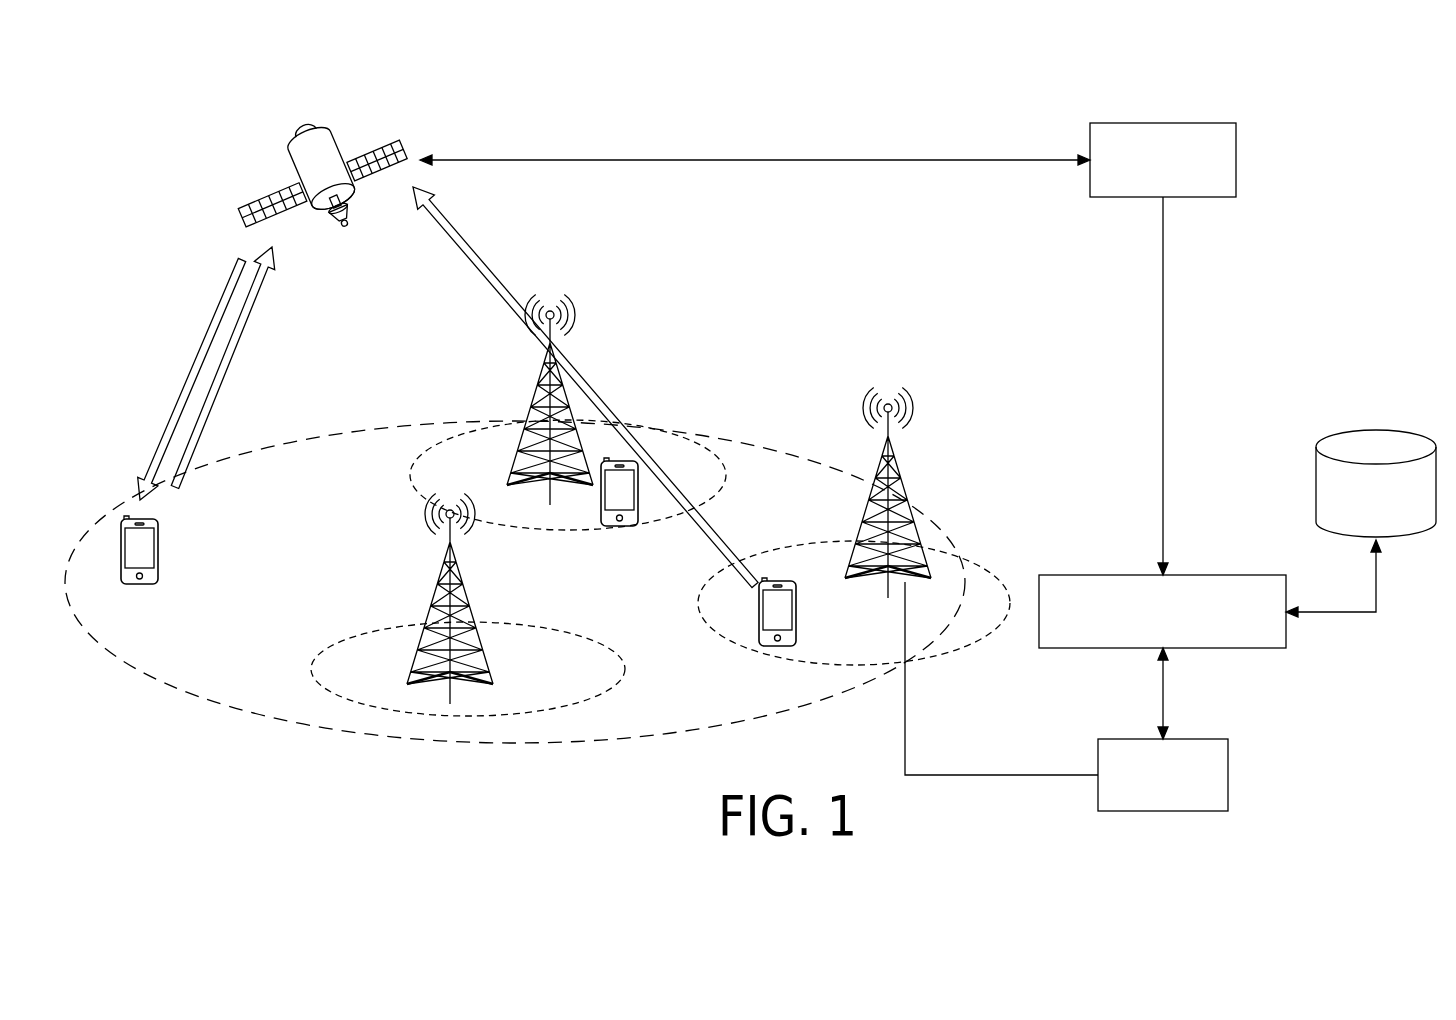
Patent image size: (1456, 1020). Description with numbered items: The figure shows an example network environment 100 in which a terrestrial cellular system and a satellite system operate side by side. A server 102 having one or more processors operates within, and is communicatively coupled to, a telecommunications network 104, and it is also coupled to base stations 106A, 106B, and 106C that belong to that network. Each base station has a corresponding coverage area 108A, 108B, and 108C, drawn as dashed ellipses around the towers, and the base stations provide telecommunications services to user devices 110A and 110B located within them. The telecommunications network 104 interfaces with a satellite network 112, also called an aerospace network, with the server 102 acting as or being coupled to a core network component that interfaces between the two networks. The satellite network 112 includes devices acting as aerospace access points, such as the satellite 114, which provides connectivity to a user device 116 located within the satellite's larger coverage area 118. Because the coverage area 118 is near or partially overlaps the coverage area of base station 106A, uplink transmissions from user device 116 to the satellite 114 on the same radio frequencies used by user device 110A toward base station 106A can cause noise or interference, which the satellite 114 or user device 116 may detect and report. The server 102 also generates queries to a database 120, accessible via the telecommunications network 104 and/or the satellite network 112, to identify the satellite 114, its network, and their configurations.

The network environment 100 is at (1332, 93).
The server 102 is at (1140, 812).
The telecommunications network 104 is at (1090, 575).
The base station 106A is at (900, 465).
The base station 106B is at (540, 378).
The base station 106C is at (440, 578).
The coverage area 108A is at (705, 596).
The coverage area 108B is at (411, 487).
The coverage area 108C is at (378, 632).
The user device 110A is at (798, 617).
The user device 110B is at (618, 526).
The satellite network 112 is at (1143, 123).
The satellite 114 is at (289, 152).
The user device 116 is at (159, 549).
The coverage area 118 is at (336, 436).
The database 120 is at (1362, 430).